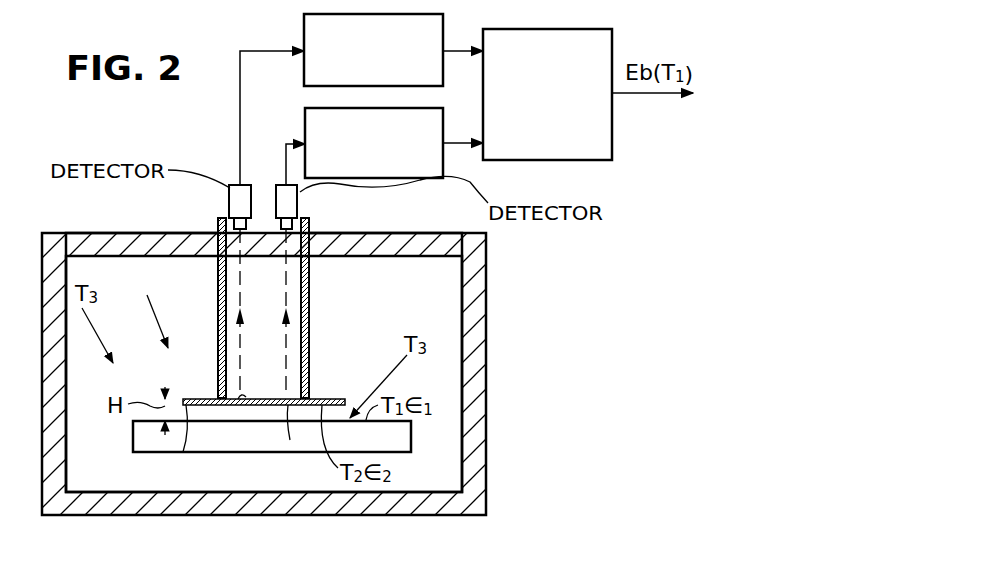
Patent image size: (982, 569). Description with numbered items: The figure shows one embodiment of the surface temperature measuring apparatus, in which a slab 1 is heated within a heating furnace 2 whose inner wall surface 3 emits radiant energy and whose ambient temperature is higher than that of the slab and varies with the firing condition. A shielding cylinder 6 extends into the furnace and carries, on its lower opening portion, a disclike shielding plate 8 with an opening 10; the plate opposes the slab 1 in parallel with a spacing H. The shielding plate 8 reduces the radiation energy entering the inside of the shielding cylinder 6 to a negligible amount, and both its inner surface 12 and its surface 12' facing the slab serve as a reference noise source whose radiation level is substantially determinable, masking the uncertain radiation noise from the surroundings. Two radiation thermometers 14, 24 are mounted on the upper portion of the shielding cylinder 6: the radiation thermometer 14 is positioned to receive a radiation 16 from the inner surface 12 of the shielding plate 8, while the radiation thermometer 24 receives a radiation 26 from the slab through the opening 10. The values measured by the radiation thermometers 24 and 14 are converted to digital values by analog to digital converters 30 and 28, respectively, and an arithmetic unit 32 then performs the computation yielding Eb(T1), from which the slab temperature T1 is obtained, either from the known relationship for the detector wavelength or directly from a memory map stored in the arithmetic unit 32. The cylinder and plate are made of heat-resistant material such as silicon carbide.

The slab 1 is at (411, 423).
The heating furnace 2 is at (461, 233).
The inner wall surface of the furnace 3 is at (462, 290).
The shielding cylinder 6 is at (309, 323).
The shielding plate 8 is at (329, 399).
The opening 10 is at (290, 440).
The inner surface 12 is at (234, 440).
The surface opposite to the slab 12' is at (165, 445).
The radiation thermometer 14 is at (229, 200).
The radiation 16 is at (240, 290).
The radiation thermometer 24 is at (297, 196).
The radiation 26 is at (286, 289).
The analog to digital converter 28 is at (304, 70).
The analog to digital converter 30 is at (305, 126).
The arithmetic unit 32 is at (545, 160).